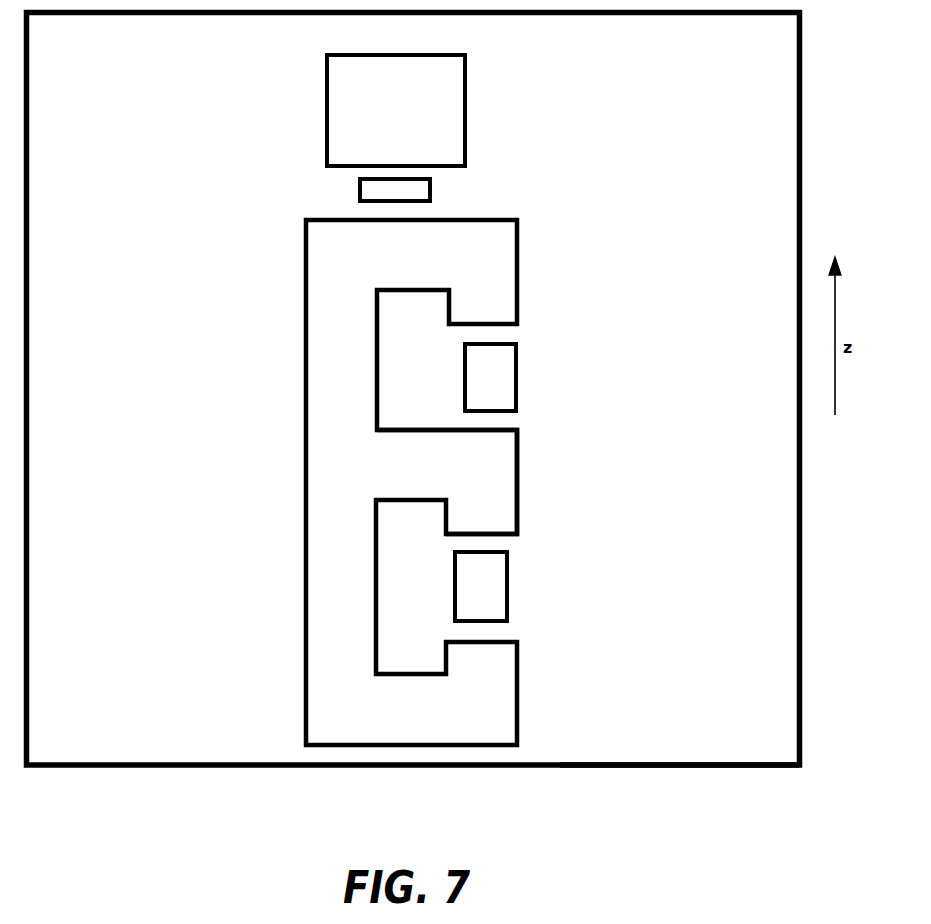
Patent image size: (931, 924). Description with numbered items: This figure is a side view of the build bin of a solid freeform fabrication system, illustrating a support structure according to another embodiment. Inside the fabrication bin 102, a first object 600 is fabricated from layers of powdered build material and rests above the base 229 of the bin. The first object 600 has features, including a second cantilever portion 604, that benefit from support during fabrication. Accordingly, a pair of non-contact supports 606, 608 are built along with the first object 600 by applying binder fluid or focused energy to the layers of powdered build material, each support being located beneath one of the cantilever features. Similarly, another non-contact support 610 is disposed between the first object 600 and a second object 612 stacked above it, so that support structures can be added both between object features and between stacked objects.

The fabrication bin 102 is at (221, 110).
The base 229 is at (640, 762).
The first object 600 is at (305, 364).
The second cantilever portion 604 is at (518, 468).
The non-contact support 606 is at (518, 371).
The non-contact support 608 is at (508, 582).
The non-contact support 610 is at (433, 188).
The second object 612 is at (416, 128).